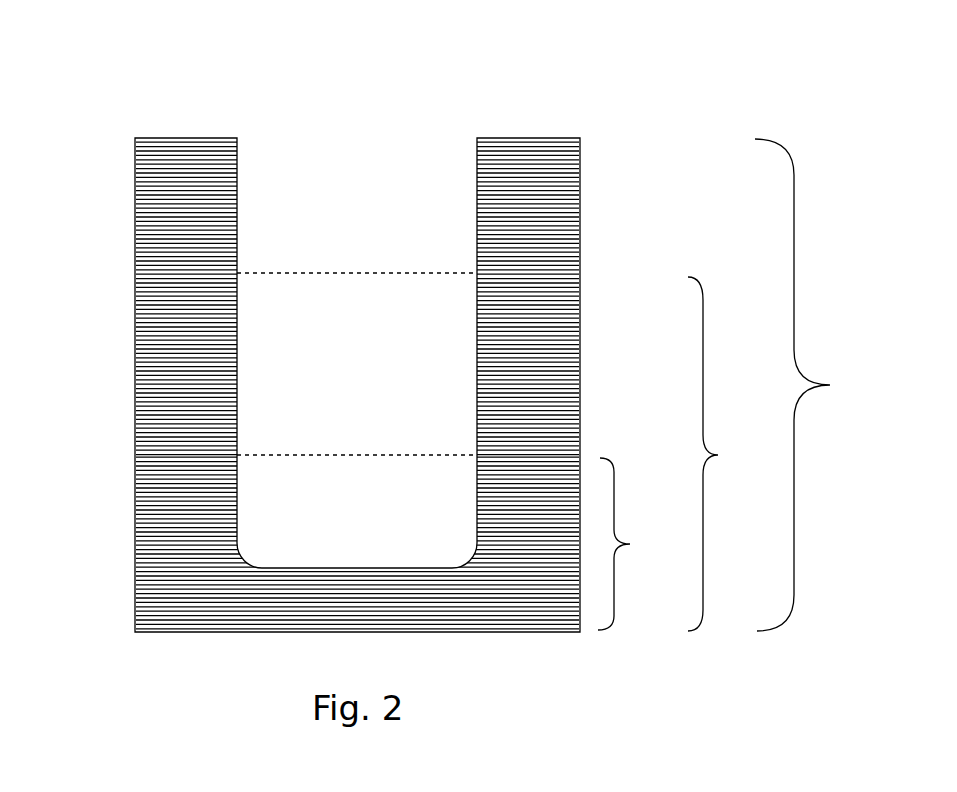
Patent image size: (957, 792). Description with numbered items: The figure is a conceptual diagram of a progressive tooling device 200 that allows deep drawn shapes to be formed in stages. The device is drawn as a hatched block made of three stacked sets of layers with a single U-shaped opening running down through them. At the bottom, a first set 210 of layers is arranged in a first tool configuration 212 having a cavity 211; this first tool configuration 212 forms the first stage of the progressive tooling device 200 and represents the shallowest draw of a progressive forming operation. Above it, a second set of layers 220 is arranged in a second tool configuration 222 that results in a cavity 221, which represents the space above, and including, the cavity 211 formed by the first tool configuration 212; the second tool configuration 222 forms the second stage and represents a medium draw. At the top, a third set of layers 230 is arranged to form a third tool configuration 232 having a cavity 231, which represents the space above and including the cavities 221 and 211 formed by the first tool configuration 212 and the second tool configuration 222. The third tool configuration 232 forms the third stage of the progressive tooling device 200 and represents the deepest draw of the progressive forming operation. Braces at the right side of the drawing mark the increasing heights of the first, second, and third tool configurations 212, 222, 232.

The progressive tooling device 200 is at (158, 112).
The first set of layers 210 is at (135, 503).
The cavity 211 is at (378, 528).
The first tool configuration 212 is at (639, 544).
The second set of layers 220 is at (135, 337).
The cavity 221 is at (378, 367).
The second tool configuration 222 is at (728, 454).
The third set of layers 230 is at (135, 183).
The cavity 231 is at (378, 197).
The third tool configuration 232 is at (819, 385).